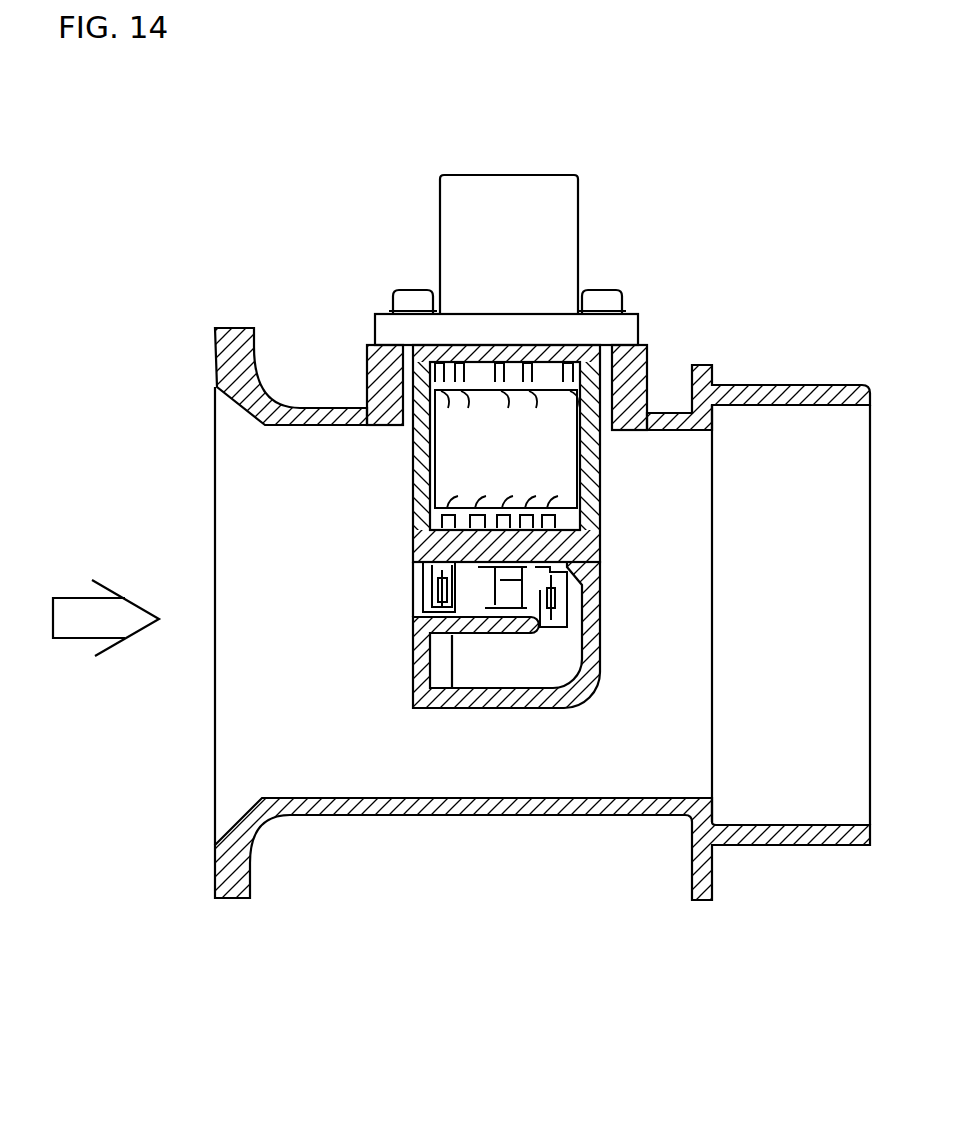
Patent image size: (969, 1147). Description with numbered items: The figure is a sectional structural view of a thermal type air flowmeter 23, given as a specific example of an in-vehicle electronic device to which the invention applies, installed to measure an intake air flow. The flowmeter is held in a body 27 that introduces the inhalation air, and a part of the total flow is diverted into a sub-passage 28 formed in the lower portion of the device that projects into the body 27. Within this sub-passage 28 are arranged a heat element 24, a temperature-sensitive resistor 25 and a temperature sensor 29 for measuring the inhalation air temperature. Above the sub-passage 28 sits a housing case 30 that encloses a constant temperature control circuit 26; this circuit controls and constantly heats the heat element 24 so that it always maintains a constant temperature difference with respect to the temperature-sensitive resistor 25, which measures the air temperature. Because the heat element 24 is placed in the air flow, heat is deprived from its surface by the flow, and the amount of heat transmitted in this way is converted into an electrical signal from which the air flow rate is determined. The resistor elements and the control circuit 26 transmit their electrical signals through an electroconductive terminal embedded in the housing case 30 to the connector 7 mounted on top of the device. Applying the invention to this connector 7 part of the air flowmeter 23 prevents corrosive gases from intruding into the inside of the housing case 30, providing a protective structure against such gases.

The connector 7 is at (423, 243).
The air flowmeter 23 is at (390, 254).
The heat element 24 is at (575, 817).
The temperature-sensitive resistor 25 is at (502, 819).
The constant temperature control circuit 26 is at (577, 331).
The body 27 is at (519, 702).
The sub-passage 28 is at (492, 814).
The temperature sensor 29 is at (373, 821).
The housing case 30 is at (607, 367).